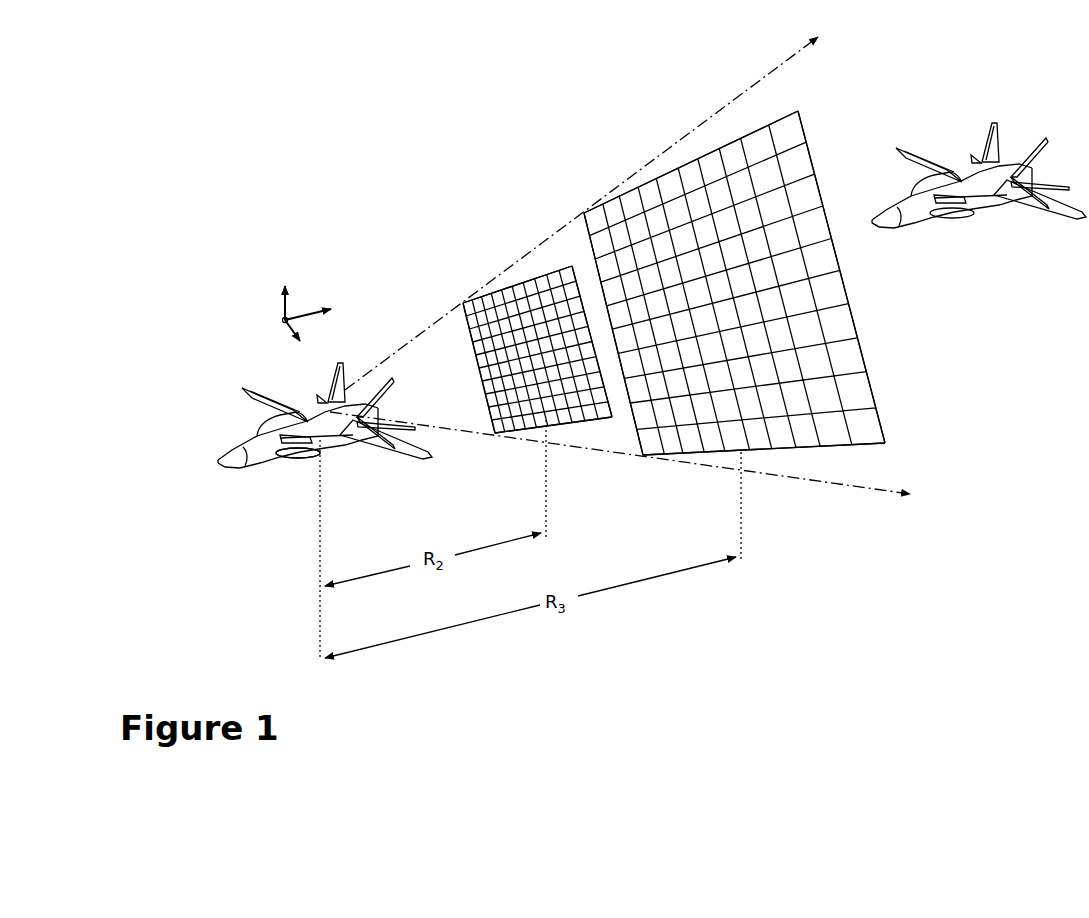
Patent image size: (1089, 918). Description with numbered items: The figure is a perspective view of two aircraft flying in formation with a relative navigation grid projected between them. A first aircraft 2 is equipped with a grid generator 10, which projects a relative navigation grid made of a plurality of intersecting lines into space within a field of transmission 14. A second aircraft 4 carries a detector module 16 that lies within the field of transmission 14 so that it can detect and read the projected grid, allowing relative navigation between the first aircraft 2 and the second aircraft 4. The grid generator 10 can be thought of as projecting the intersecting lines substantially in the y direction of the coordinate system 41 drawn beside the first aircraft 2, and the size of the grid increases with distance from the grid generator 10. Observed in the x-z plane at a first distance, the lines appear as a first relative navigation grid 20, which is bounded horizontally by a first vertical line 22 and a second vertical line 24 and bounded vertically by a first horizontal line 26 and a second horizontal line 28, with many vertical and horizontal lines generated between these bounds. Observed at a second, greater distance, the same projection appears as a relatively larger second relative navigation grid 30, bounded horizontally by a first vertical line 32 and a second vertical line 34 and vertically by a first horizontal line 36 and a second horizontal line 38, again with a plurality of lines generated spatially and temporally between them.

The first aircraft 2 is at (262, 467).
The second aircraft 4 is at (985, 200).
The grid generator 10 is at (310, 450).
The field of transmission 14 is at (427, 399).
The detector module 16 is at (878, 226).
The first relative navigation grid 20 is at (536, 272).
The first vertical line 22 is at (467, 325).
The second vertical line 24 is at (577, 282).
The first horizontal line 26 is at (504, 289).
The second horizontal line 28 is at (578, 422).
The second relative navigation grid 30 is at (804, 119).
The first vertical line of the second relative navigation grid 32 is at (636, 432).
The second vertical line of the second relative navigation grid 34 is at (811, 160).
The first horizontal line of the second relative navigation grid 36 is at (663, 175).
The second horizontal line of the second relative navigation grid 38 is at (813, 447).
The coordinate system 41 is at (282, 312).